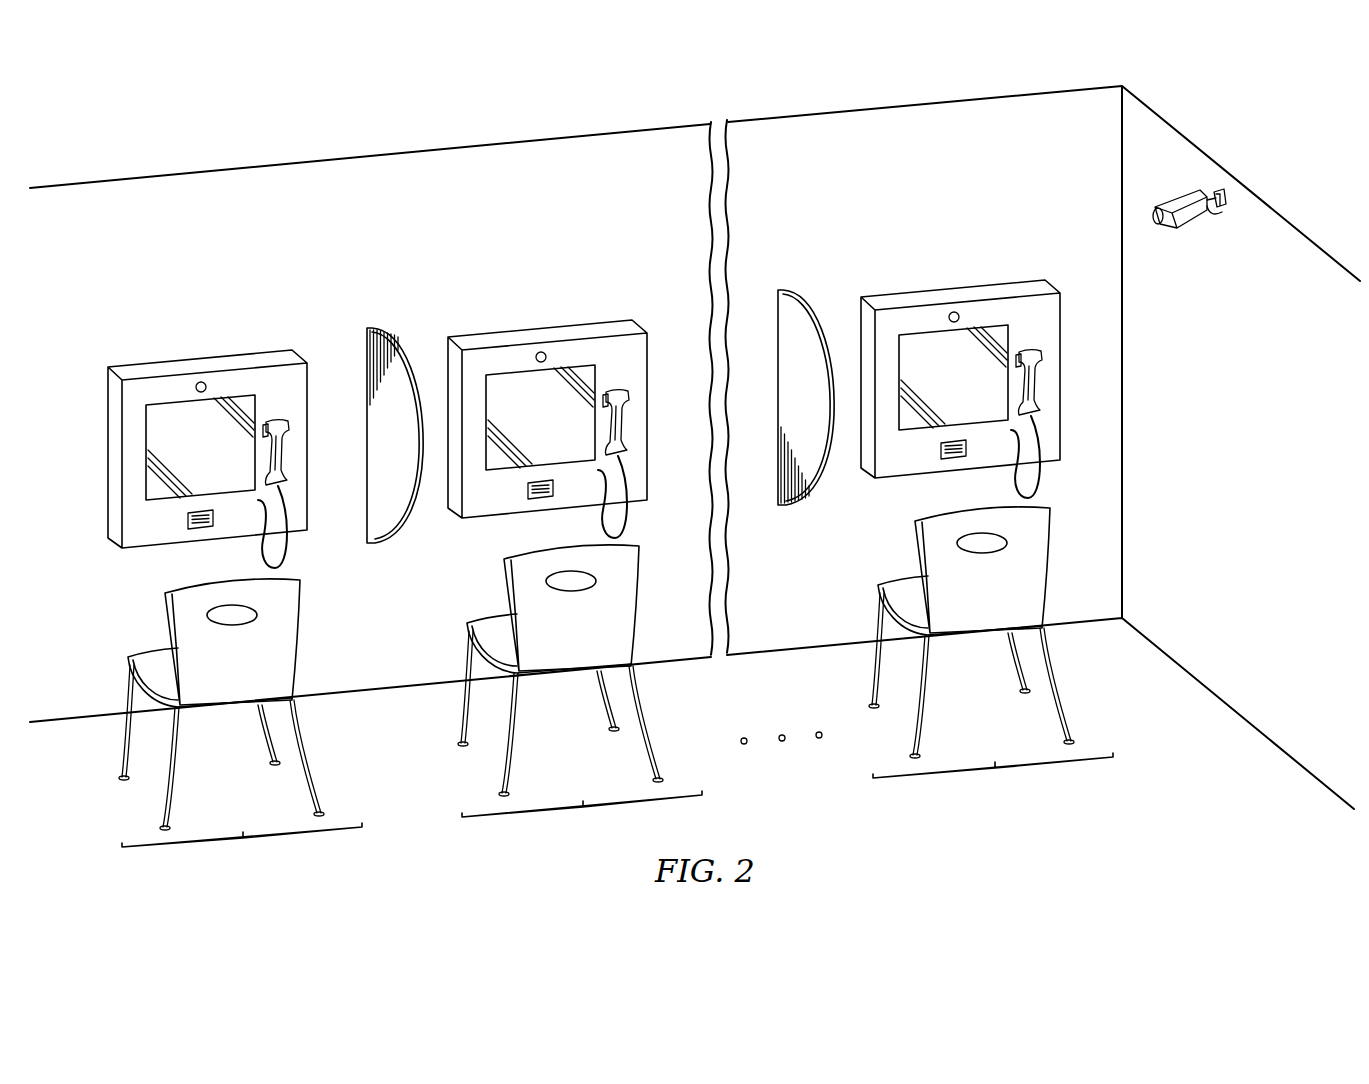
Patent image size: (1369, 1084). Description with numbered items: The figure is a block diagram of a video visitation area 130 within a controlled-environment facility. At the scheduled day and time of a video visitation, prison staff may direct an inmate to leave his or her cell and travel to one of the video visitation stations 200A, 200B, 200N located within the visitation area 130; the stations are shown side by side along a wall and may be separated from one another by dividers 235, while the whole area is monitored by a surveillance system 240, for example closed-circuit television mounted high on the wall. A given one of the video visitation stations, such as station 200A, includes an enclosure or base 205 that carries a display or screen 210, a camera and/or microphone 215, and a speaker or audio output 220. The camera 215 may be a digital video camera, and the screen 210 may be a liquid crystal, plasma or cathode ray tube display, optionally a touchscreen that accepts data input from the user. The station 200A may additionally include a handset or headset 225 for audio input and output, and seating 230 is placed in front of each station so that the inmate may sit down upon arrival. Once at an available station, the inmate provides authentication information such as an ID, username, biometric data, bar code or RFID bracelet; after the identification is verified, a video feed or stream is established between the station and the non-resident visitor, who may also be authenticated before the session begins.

The visitation area 130 is at (902, 823).
The video visitation station 200A is at (233, 596).
The video visitation station 200B is at (575, 586).
The video visitation station 200N is at (945, 546).
The enclosure or base 205 is at (199, 455).
The display or screen 210 is at (157, 426).
The camera and/or microphone 215 is at (198, 381).
The speaker or audio output 220 is at (197, 537).
The handset or headset 225 is at (278, 418).
The seating 230 is at (277, 658).
The dividers 235 is at (373, 527).
The surveillance system 240 is at (1172, 200).